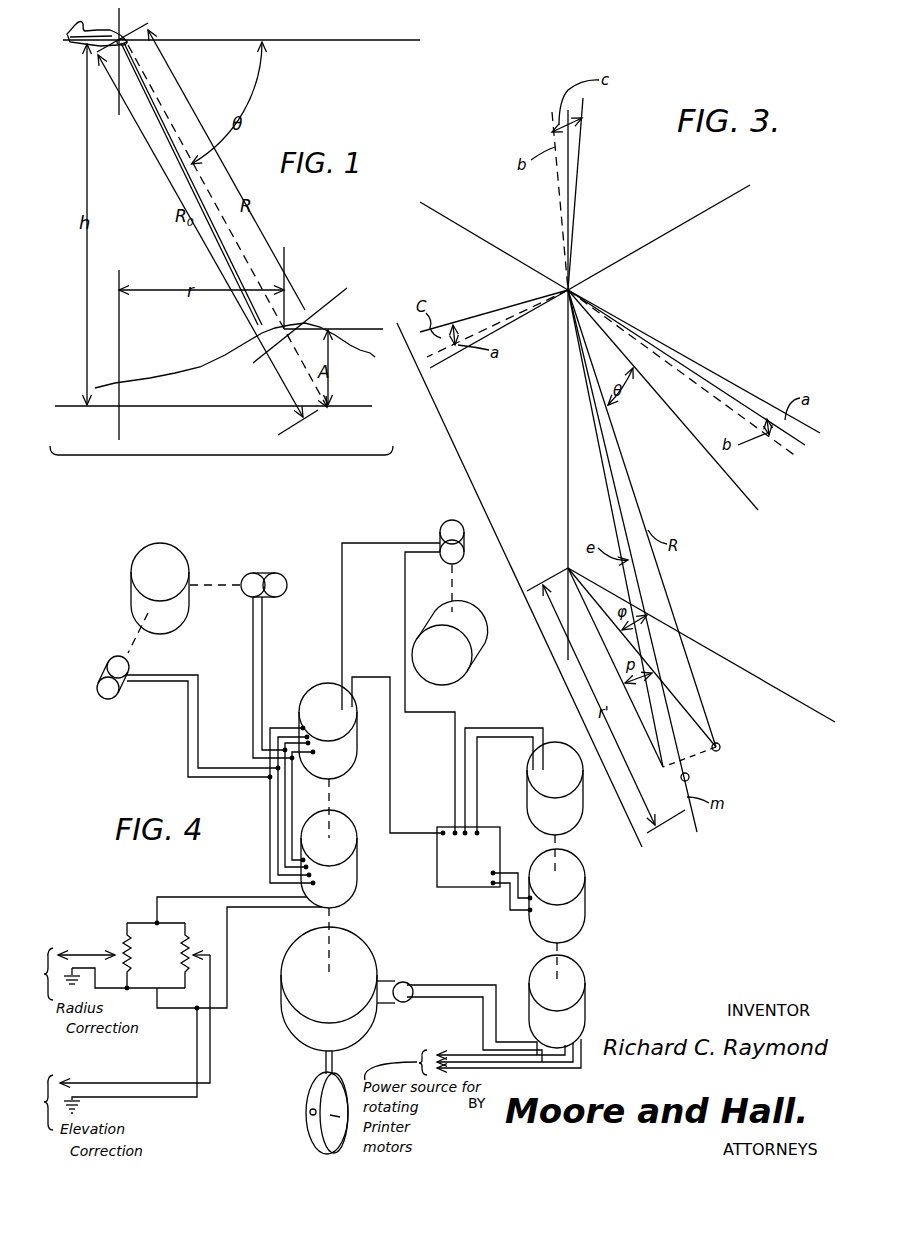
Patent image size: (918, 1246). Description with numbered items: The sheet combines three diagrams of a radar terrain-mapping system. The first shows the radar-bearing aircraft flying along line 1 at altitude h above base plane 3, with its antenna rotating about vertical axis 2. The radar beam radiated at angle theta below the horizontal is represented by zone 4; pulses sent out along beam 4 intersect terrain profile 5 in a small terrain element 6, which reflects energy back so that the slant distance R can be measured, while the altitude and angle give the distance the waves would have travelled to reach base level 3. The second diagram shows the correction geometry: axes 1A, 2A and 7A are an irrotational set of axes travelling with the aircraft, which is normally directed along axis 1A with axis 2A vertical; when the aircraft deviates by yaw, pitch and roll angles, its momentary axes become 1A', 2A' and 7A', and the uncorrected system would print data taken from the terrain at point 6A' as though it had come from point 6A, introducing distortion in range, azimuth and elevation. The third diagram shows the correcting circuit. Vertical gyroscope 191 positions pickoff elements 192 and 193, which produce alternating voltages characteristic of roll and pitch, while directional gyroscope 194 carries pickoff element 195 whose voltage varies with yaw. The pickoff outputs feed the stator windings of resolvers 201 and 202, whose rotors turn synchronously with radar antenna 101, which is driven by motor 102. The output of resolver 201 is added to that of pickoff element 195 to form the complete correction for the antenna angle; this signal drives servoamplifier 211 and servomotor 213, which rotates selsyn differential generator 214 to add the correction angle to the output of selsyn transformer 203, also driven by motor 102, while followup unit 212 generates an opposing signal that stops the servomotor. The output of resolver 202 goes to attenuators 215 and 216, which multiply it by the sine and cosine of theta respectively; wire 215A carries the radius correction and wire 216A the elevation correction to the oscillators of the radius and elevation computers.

In FIG. 1, the flight line 1 is at (297, 40).
In FIG. 1, the vertical axis 2 is at (120, 16).
In FIG. 1, the base plane 3 is at (165, 410).
In FIG. 1, the radar beam zone 4 is at (258, 238).
In FIG. 1, the terrain profile 5 is at (165, 372).
In FIG. 1, the terrain element 6 is at (254, 363).
In FIG. 3, the longitudinal axis 1A is at (694, 361).
In FIG. 3, the momentary longitudinal axis 1A' is at (682, 373).
In FIG. 3, the vertical axis 2A is at (543, 201).
In FIG. 3, the momentary vertical axis 2A' is at (600, 194).
In FIG. 3, the uncorrected terrain point 6A is at (665, 524).
In FIG. 3, the actual terrain point 6A' is at (710, 779).
In FIG. 3, the transverse axis 7A is at (499, 340).
In FIG. 3, the momentary transverse axis 7A' is at (494, 310).
In FIG. 4, the radar antenna 101 is at (305, 1123).
In FIG. 4, the motor 102 is at (298, 1030).
In FIG. 4, the vertical gyroscope 191 is at (177, 552).
In FIG. 4, the pickoff element 192 is at (260, 573).
In FIG. 4, the pickoff element 193 is at (100, 674).
In FIG. 4, the directional gyroscope 194 is at (478, 650).
In FIG. 4, the pickoff element 195 is at (440, 534).
In FIG. 4, the resolver 201 is at (357, 767).
In FIG. 4, the resolver 202 is at (352, 893).
In FIG. 4, the selsyn transformer 203 is at (390, 1003).
In FIG. 4, the servoamplifier 211 is at (467, 888).
In FIG. 4, the followup unit 212 is at (587, 805).
In FIG. 4, the servomotor 213 is at (586, 895).
In FIG. 4, the selsyn differential generator 214 is at (588, 1002).
In FIG. 4, the attenuator 215 is at (120, 945).
In FIG. 4, the wire 215A is at (88, 952).
In FIG. 4, the attenuator 216 is at (193, 946).
In FIG. 4, the wire 216A is at (150, 1082).